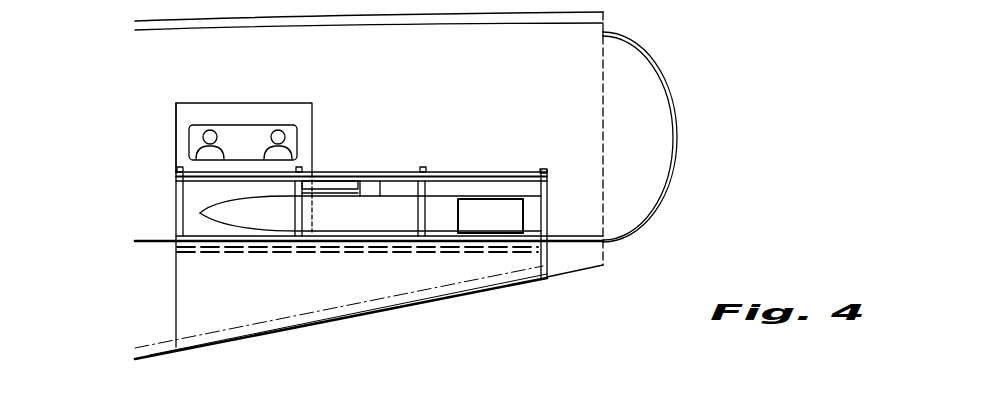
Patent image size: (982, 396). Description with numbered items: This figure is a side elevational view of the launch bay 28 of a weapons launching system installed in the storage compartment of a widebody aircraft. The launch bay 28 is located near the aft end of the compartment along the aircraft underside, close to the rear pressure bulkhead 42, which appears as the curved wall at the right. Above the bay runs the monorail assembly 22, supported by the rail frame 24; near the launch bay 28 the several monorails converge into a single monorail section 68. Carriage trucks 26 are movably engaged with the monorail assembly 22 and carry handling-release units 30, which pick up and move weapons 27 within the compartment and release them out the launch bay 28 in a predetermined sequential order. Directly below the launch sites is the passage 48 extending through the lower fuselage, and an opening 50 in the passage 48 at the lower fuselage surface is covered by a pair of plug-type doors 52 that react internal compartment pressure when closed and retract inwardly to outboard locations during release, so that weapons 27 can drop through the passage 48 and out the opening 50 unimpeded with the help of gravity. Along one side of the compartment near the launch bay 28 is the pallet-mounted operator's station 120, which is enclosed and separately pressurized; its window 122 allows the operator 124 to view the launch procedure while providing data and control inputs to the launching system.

The monorail assembly 22 is at (462, 174).
The rail frame 24 is at (549, 192).
The carriage trucks 26 is at (374, 196).
The weapons 27 is at (505, 215).
The launch bay 28 is at (433, 109).
The handling-release units 30 is at (306, 191).
The rear pressure bulkhead 42 is at (660, 76).
The passage 48 is at (202, 287).
The opening 50 is at (328, 318).
The plug-type doors 52 is at (517, 253).
The single monorail section 68 is at (507, 180).
The operator's station 120 is at (287, 103).
The window 122 is at (189, 135).
The operator 124 is at (267, 140).